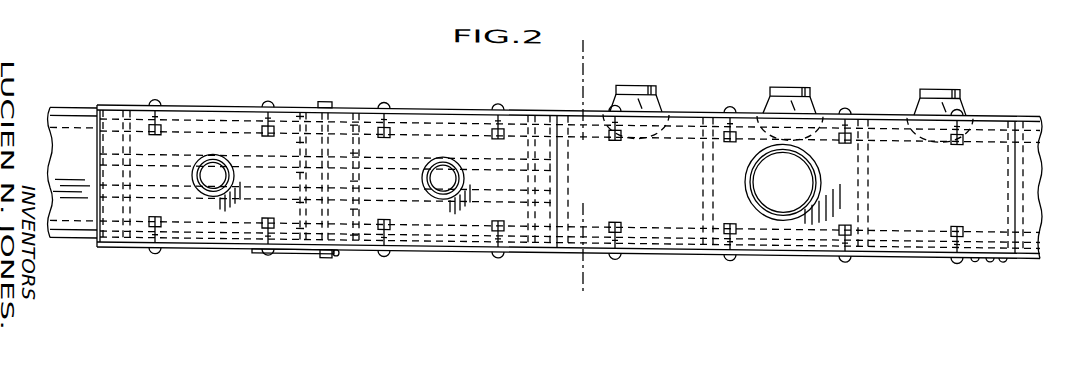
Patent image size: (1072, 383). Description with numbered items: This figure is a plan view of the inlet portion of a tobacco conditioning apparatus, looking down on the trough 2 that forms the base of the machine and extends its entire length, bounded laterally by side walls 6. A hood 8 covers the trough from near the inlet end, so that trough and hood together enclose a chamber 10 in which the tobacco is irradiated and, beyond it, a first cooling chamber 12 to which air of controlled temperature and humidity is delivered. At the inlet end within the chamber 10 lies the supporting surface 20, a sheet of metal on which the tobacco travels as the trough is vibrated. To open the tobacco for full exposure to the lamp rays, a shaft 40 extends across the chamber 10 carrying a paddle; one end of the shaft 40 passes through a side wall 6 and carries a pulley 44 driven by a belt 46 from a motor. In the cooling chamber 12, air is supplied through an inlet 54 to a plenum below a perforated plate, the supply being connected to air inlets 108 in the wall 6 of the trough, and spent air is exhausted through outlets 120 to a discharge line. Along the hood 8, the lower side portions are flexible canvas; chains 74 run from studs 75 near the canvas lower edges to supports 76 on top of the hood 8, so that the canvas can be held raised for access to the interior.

The trough 2 is at (78, 107).
The supporting surface 20 is at (82, 163).
The side walls 6 is at (441, 103).
The chamber 10 is at (250, 158).
The first cooling chamber 12 is at (648, 179).
The hood 8 is at (689, 140).
The outlets 120 is at (795, 182).
The inlet 54 is at (642, 78).
The air inlets 108 is at (657, 95).
The chains 74 is at (270, 103).
The studs 75 is at (160, 103).
The supports 76 is at (496, 132).
The shaft 40 is at (325, 258).
The pulley 44 is at (337, 255).
The belt 46 is at (298, 257).